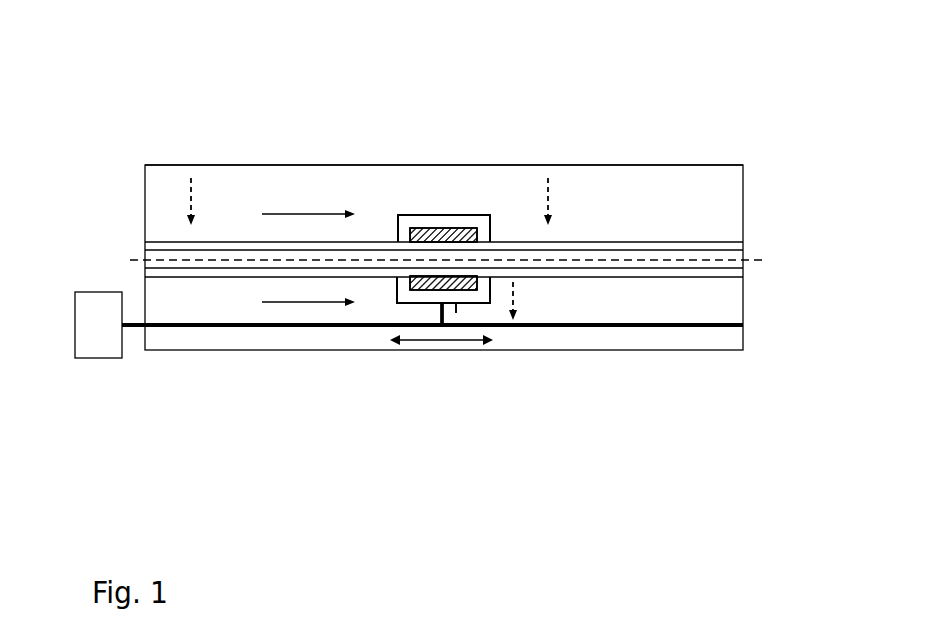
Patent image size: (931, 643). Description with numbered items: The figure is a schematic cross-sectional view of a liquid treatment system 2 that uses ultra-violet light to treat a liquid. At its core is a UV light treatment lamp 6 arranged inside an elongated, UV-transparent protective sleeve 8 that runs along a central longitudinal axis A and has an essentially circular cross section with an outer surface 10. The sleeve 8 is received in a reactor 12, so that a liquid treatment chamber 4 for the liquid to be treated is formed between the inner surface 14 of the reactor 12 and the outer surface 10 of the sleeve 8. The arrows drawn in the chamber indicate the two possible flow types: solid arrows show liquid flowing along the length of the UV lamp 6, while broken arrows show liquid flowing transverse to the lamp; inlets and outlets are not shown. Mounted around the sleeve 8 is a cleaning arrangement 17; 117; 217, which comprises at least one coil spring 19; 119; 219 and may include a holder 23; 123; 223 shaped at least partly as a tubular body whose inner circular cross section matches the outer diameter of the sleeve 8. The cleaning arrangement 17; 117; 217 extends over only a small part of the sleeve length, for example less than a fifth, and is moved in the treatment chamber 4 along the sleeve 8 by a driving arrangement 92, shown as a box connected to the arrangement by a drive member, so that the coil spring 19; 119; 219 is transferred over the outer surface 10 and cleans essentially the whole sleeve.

The liquid treatment system 2 is at (78, 172).
The treatment chamber 4 is at (220, 202).
The UV light treatment lamp 6 is at (712, 255).
The protective UV-transparent sleeve 8 is at (683, 247).
The outer surface of the sleeve 10 is at (653, 233).
The reactor 12 is at (495, 165).
The inner surface of the reactor 14 is at (570, 175).
The cleaning arrangement 17 is at (403, 194).
The cleaning arrangement 117 is at (397, 203).
The cleaning arrangement 217 is at (422, 203).
The coil spring 19 is at (436, 228).
The coil spring 119 is at (441, 169).
The coil spring 219 is at (451, 169).
The holder 23 is at (478, 212).
The holder 123 is at (468, 153).
The holder 223 is at (491, 153).
The driving arrangement 92 is at (138, 362).
The central longitudinal axis A is at (461, 258).